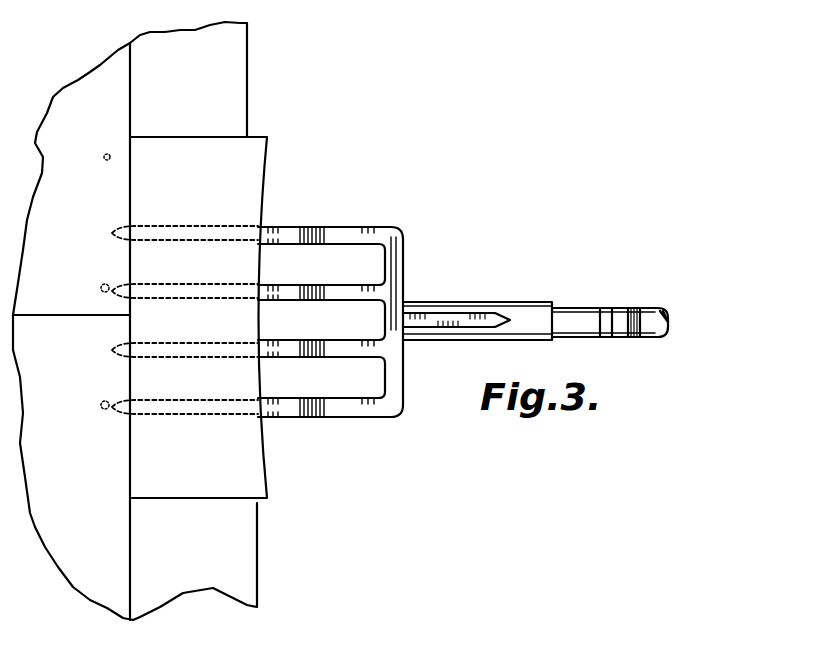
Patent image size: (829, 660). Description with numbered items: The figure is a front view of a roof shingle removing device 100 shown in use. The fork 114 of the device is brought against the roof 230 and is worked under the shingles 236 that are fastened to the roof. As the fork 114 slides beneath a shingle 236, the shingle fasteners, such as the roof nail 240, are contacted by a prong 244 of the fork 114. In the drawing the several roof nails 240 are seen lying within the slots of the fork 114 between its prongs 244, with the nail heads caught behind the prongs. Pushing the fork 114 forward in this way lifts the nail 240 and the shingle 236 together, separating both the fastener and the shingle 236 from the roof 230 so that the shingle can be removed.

The roof shingle removing device 100 is at (463, 291).
The fork 114 is at (397, 408).
The roof 230 is at (93, 452).
The shingle 236 is at (139, 183).
The roof nail 240 is at (105, 405).
The prong 244 is at (160, 408).